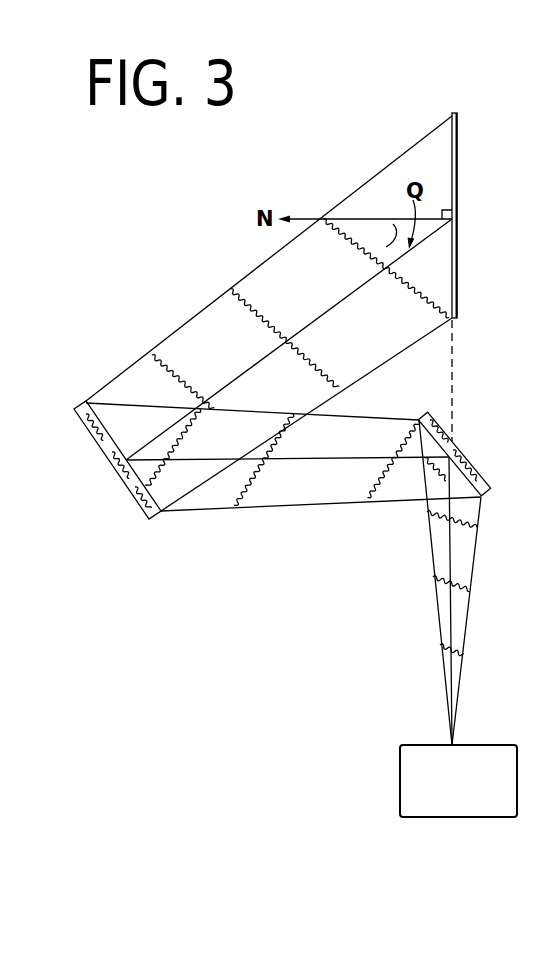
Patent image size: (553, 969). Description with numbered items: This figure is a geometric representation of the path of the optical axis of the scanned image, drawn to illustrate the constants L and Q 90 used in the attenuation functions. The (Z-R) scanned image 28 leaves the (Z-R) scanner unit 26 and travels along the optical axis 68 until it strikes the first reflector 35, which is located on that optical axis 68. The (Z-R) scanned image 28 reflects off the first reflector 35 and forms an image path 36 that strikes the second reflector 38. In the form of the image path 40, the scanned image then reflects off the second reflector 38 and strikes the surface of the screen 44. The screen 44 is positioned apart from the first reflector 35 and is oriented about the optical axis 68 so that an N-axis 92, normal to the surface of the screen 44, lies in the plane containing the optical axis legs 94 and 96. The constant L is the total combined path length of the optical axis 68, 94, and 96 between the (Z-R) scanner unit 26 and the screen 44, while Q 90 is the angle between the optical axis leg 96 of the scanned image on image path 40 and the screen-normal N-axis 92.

The (Z-R) scanner unit 26 is at (400, 755).
The (Z-R) scanned image 28 is at (457, 628).
The first reflector 35 is at (486, 471).
The image path 36 is at (279, 497).
The second reflector 38 is at (117, 470).
The image path 40 is at (217, 302).
The screen 44 is at (458, 157).
The optical axis 68 is at (450, 552).
The Q 90 is at (377, 234).
The N-axis 92 is at (302, 219).
The optical axis leg 94 is at (353, 457).
The optical axis leg 96 is at (263, 358).